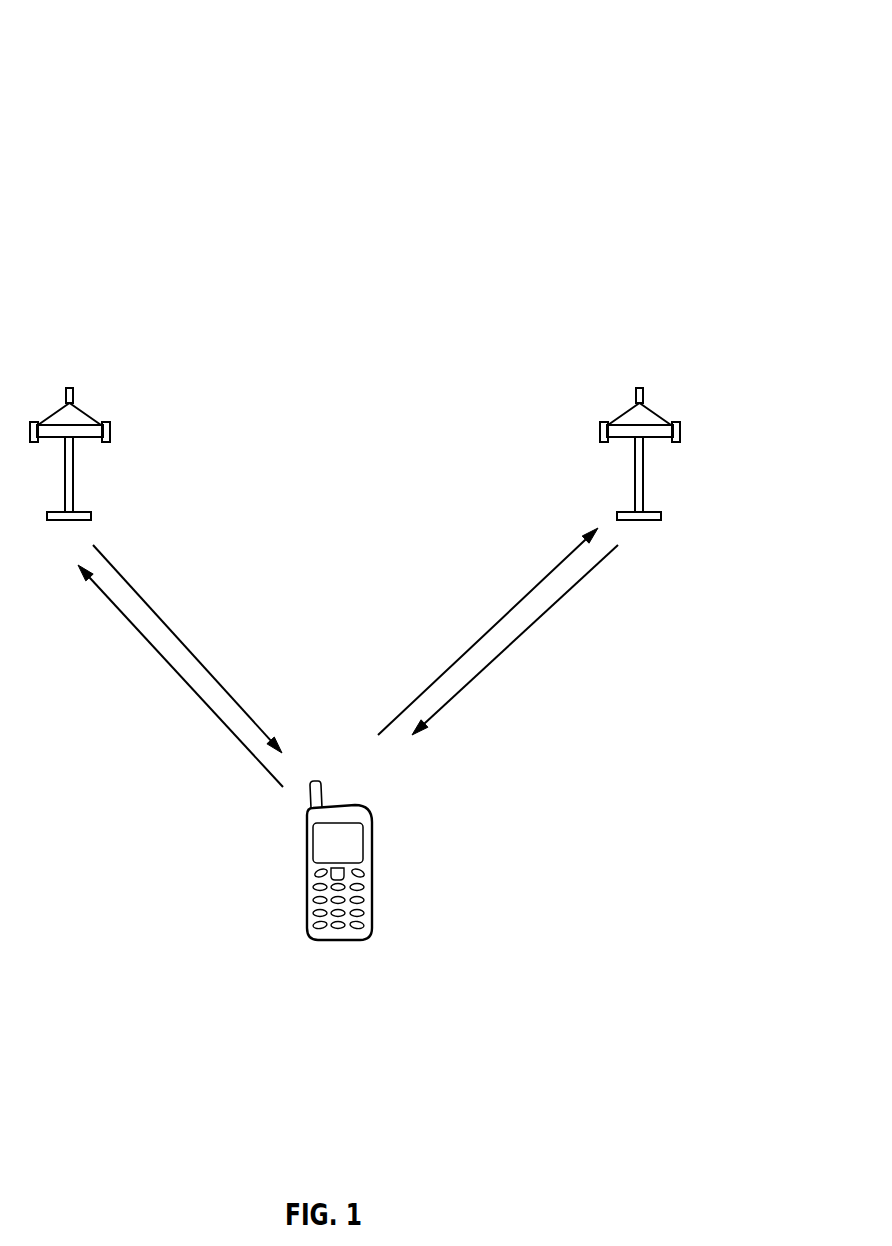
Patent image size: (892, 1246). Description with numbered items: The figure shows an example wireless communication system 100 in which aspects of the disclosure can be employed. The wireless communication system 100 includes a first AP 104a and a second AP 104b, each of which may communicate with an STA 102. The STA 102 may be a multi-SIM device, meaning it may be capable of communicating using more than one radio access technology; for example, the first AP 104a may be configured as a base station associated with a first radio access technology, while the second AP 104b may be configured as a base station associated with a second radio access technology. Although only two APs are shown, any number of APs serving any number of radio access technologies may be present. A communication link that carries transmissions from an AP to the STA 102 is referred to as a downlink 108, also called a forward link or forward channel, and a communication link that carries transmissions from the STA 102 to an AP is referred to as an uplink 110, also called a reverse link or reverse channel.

The wireless communication system 100 is at (704, 81).
The STA 102 is at (342, 806).
The first AP 104a is at (68, 387).
The second AP 104b is at (638, 387).
The downlink 108 is at (183, 644).
The uplink 110 is at (172, 668).